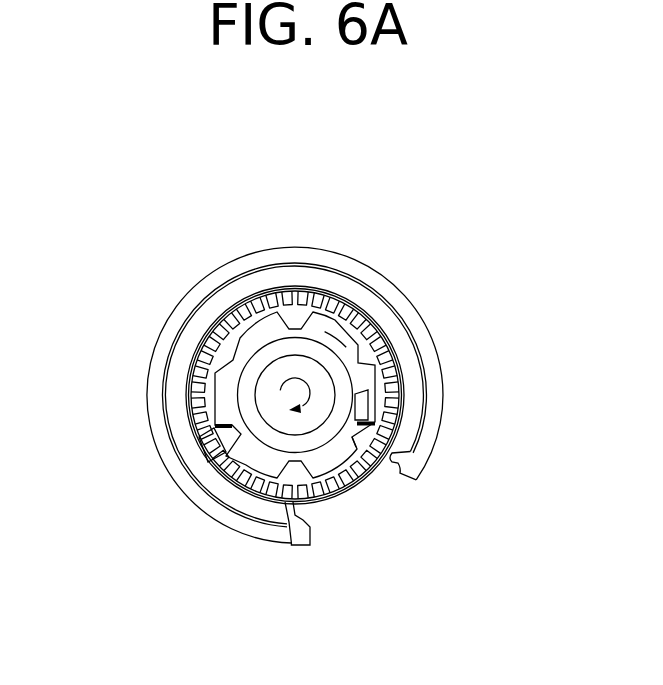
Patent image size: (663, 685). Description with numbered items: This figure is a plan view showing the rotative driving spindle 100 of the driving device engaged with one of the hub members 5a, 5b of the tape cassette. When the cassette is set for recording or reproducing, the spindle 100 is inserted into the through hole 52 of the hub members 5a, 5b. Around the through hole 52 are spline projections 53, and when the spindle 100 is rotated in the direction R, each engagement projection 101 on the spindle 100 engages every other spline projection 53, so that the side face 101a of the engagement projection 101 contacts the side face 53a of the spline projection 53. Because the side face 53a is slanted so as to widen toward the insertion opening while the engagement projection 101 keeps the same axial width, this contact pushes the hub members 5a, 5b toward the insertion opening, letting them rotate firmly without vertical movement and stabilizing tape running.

The hub member 5a is at (295, 347).
The hub member 5b is at (226, 250).
The through hole 52 is at (222, 357).
The spline projection 53 is at (295, 318).
The side face 53a is at (224, 452).
The rotative driving spindle 100 is at (255, 403).
The engagement projection 101 is at (221, 456).
The side face 101a is at (240, 428).